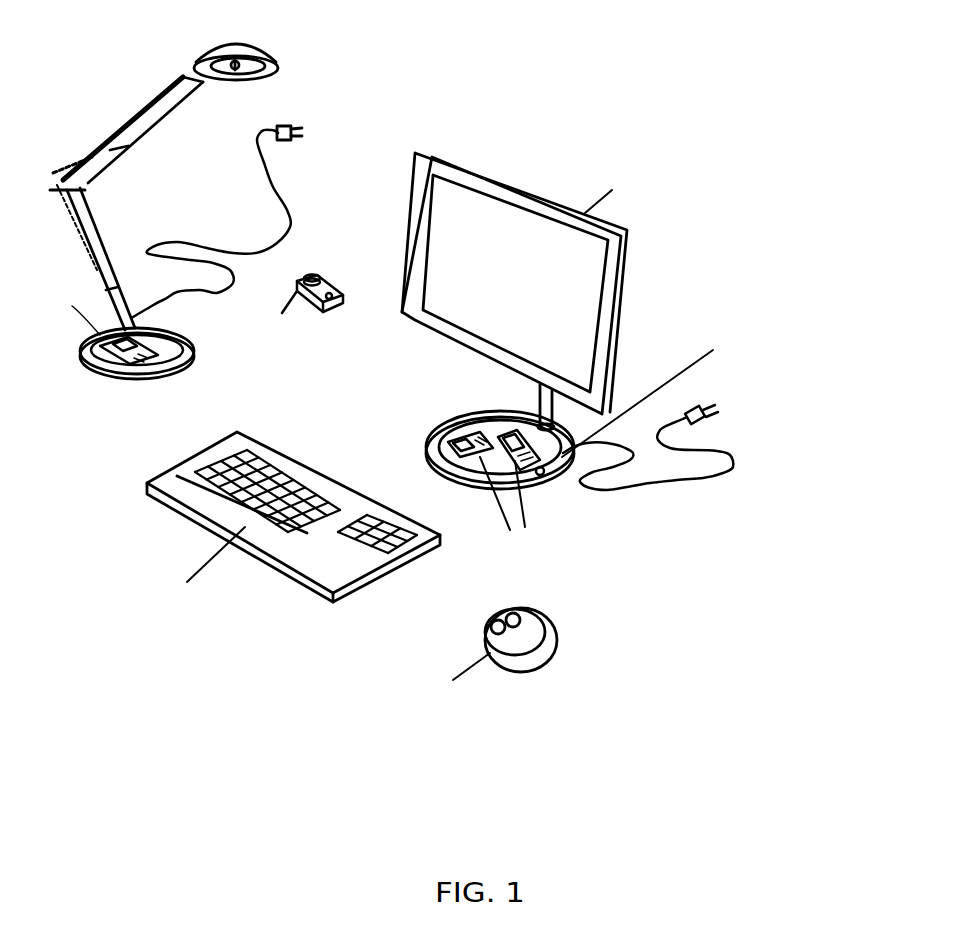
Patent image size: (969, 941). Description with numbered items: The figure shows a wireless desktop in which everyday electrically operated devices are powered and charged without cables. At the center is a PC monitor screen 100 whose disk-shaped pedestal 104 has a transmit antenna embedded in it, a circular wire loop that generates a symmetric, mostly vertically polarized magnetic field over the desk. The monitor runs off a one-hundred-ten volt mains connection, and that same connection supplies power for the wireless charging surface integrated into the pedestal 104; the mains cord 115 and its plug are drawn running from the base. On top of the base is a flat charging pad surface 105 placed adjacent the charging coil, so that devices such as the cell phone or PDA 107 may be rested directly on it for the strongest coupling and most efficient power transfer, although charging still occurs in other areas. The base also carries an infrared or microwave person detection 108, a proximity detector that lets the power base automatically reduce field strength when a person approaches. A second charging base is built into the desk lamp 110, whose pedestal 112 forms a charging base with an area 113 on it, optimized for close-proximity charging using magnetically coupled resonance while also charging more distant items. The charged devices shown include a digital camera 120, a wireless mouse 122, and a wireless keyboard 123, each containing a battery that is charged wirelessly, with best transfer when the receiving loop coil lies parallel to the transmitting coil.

The PC monitor screen 100 is at (627, 229).
The pedestal 104 is at (437, 473).
The charging pad surface 105 is at (477, 433).
The cell phone or PDA 107 is at (452, 438).
The person detection 108 is at (542, 476).
The desk lamp 110 is at (240, 43).
The pedestal 112 is at (82, 347).
The area 113 is at (168, 343).
The mains connection cable 115 is at (733, 468).
The digital camera 120 is at (328, 290).
The wireless mouse 122 is at (553, 628).
The wireless keyboard 123 is at (147, 483).